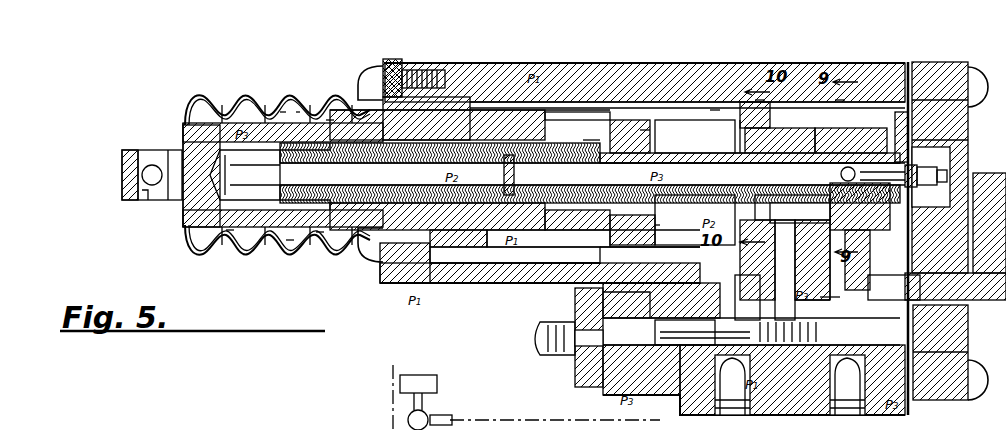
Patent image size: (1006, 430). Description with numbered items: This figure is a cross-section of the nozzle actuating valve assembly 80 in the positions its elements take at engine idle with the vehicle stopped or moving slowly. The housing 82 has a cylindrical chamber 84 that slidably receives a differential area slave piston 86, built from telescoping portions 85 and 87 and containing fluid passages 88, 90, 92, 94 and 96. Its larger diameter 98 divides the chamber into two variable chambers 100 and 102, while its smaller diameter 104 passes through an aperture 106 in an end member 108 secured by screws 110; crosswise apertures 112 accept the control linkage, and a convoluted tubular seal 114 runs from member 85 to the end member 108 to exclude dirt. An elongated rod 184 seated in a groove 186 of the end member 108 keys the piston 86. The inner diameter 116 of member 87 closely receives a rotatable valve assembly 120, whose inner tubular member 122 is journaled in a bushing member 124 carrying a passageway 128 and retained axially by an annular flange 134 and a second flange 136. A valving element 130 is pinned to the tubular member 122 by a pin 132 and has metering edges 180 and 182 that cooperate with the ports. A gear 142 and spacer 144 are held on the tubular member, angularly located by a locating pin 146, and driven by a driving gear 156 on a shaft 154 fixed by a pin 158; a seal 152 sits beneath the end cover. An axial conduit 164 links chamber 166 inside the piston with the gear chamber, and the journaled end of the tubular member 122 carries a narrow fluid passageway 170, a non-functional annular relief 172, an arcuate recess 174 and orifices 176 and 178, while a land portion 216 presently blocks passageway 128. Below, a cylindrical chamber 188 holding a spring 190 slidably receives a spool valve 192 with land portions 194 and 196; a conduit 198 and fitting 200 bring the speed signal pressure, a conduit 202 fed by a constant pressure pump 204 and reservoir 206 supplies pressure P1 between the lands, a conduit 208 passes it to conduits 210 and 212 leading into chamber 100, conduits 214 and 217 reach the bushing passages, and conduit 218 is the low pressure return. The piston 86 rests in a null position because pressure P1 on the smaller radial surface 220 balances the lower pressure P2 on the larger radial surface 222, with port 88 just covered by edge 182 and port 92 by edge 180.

The nozzle actuating valve assembly 80 is at (559, 62).
The housing 82 is at (840, 100).
The cylindrical chamber 84 is at (716, 125).
The telescoping portion 85 is at (291, 265).
The differential area slave piston 86 is at (537, 272).
The telescoping member 87 is at (210, 252).
The port 88 is at (588, 138).
The annular passage 90 is at (330, 136).
The port 92 is at (283, 112).
The port 94 is at (320, 240).
The conduit 96 is at (662, 228).
The larger diameter 98 is at (652, 132).
The chamber 100 is at (556, 280).
The chamber 102 is at (760, 100).
The smaller diameter 104 is at (298, 125).
The aperture 106 is at (420, 92).
The end member 108 is at (380, 272).
The screws 110 is at (372, 72).
The crosswise apertures 112 is at (150, 190).
The tubular seal 114 is at (226, 96).
The inner diameter 116 is at (230, 236).
The rotatable valve assembly 120 is at (274, 168).
The inner tubular member 122 is at (272, 189).
The bushing member 124 is at (740, 129).
The passageway 128 is at (812, 265).
The valving element 130 is at (675, 200).
The pin 132 is at (516, 177).
The annular flange 134 is at (745, 146).
The second flange 136 is at (898, 115).
The gear 142 is at (940, 106).
The spacer 144 is at (940, 130).
The locating pin 146 is at (905, 160).
The seal 152 is at (915, 62).
The shaft 154 is at (925, 341).
The driving gear 156 is at (940, 353).
The pin 158 is at (915, 255).
The conduit 164 is at (690, 178).
The chamber 166 is at (195, 150).
The fluid passageway 170 is at (792, 207).
The annular relief 172 is at (780, 140).
The arcuate recess 174 is at (851, 140).
The orifice 176 is at (778, 232).
The orifice 178 is at (840, 175).
The metering edge 180 is at (285, 176).
The metering edge 182 is at (630, 136).
The elongated rod 184 is at (562, 106).
The groove 186 is at (470, 95).
The cylindrical chamber 188 is at (705, 318).
The spring 190 is at (937, 286).
The spool valve 192 is at (740, 349).
The land portion 194 is at (626, 305).
The land portion 196 is at (749, 297).
The conduit 198 is at (570, 366).
The fitting 200 is at (580, 390).
The conduit 202 is at (718, 385).
The constant pressure pump 204 is at (440, 410).
The reservoir 206 is at (405, 383).
The conduit 208 is at (685, 313).
The conduit 210 is at (442, 281).
The conduit 212 is at (465, 262).
The conduit 214 is at (811, 286).
The land portion 216 is at (830, 206).
The conduit 217 is at (862, 260).
The conduit 218 is at (833, 385).
The radial surface 220 is at (578, 255).
The radial surface 222 is at (695, 136).